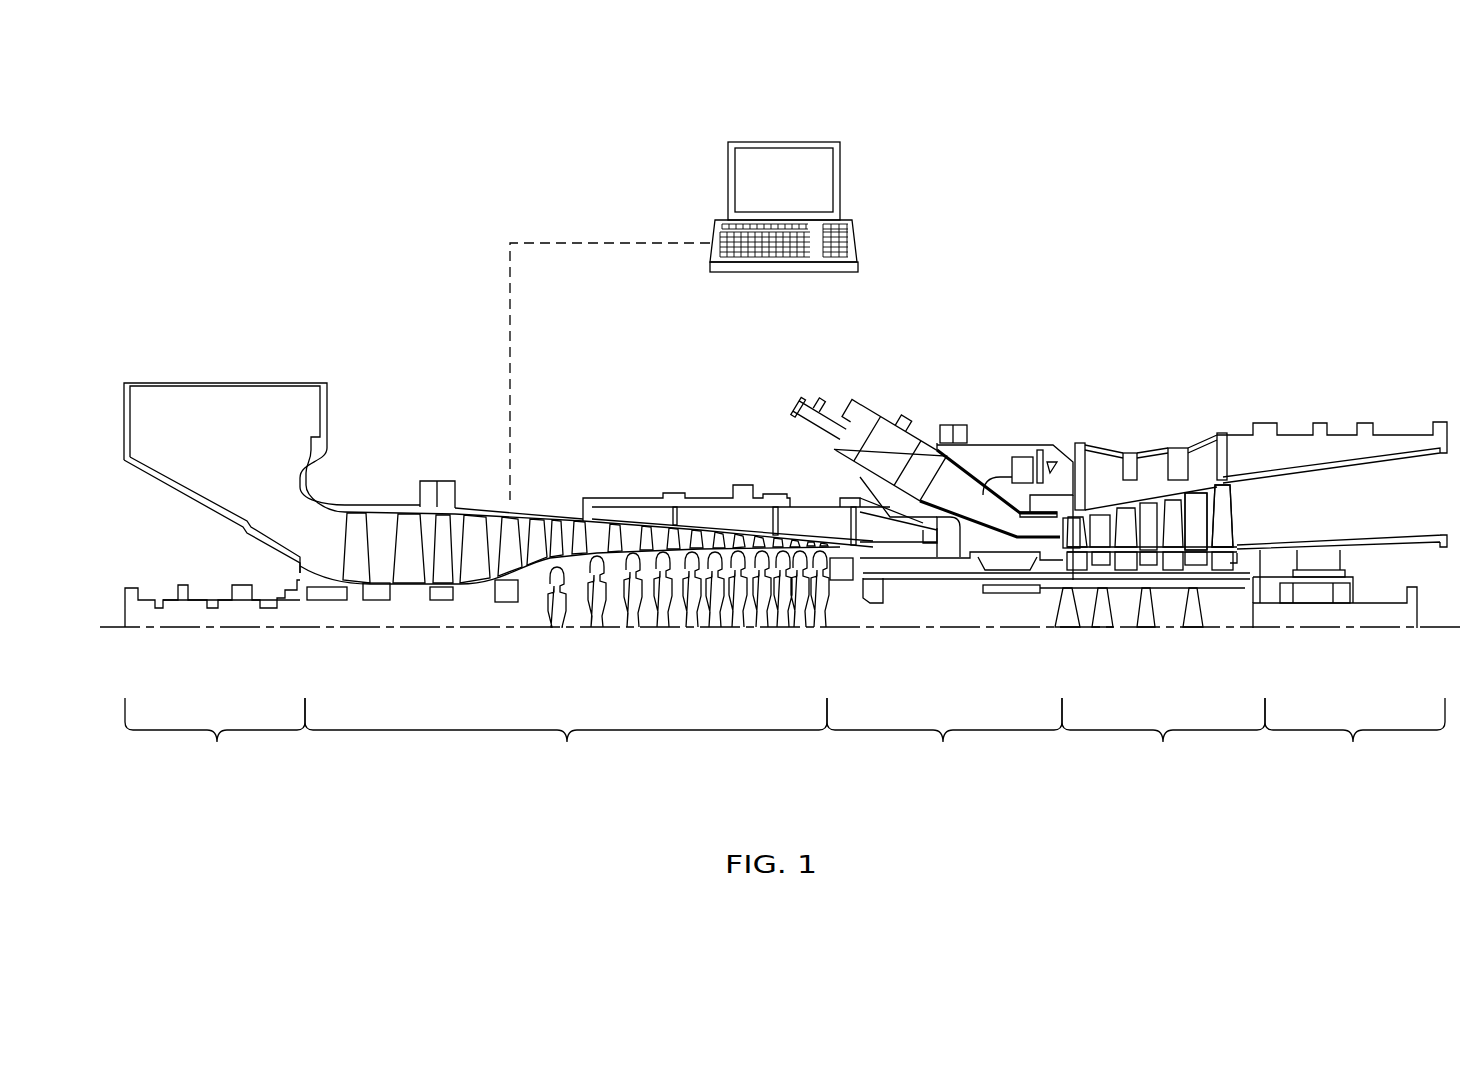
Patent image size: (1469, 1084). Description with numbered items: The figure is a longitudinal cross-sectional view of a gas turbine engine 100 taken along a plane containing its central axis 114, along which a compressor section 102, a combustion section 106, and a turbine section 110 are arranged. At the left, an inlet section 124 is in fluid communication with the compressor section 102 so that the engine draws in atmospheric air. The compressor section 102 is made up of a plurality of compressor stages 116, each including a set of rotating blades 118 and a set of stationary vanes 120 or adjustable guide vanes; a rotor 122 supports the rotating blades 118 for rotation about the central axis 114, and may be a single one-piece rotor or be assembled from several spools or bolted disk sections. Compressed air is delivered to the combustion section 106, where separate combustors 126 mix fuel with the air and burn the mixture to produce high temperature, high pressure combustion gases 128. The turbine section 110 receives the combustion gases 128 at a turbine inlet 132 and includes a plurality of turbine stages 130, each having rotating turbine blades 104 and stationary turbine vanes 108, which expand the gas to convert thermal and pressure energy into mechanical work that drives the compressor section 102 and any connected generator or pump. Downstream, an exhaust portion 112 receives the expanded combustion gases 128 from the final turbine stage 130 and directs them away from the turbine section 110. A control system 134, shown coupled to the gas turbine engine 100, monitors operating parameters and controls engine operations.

The gas turbine engine 100 is at (1143, 172).
The compressor section 102 is at (567, 742).
The rotating turbine blades 104 is at (1222, 520).
The combustion section 106 is at (943, 742).
The stationary turbine vanes 108 is at (1192, 510).
The turbine section 110 is at (1163, 742).
The exhaust portion 112 is at (1353, 742).
The central axis 114 is at (902, 627).
The compressor stages 116 is at (408, 615).
The rotating blades 118 is at (408, 537).
The stationary vanes 120 is at (377, 537).
The rotor 122 is at (273, 615).
The inlet section 124 is at (217, 742).
The combustors 126 is at (853, 410).
The combustion gases 128 is at (983, 511).
The turbine stages 130 is at (1222, 615).
The turbine inlet 132 is at (1048, 522).
The control system 134 is at (842, 180).